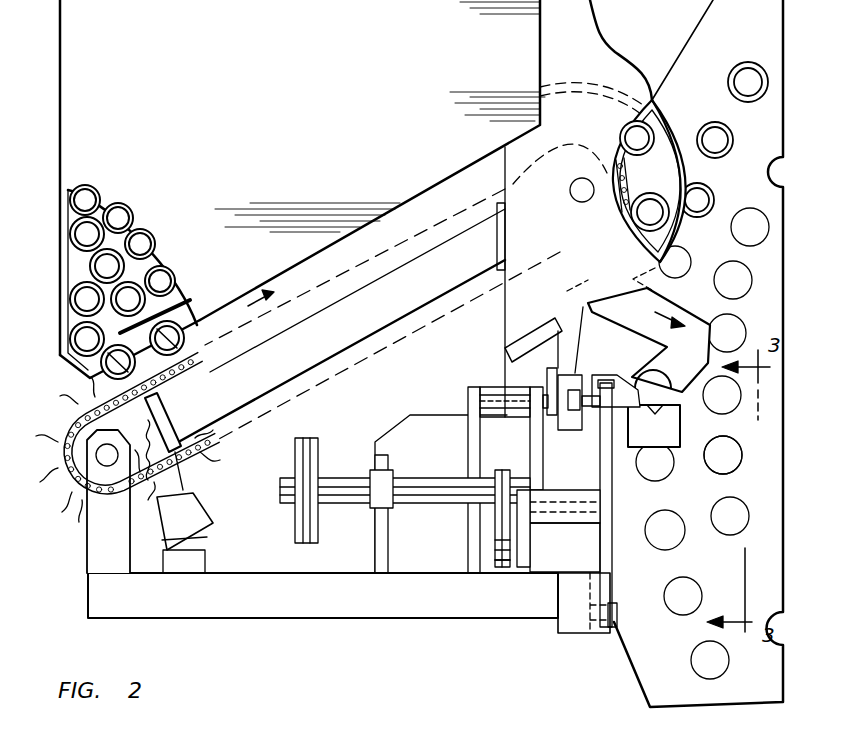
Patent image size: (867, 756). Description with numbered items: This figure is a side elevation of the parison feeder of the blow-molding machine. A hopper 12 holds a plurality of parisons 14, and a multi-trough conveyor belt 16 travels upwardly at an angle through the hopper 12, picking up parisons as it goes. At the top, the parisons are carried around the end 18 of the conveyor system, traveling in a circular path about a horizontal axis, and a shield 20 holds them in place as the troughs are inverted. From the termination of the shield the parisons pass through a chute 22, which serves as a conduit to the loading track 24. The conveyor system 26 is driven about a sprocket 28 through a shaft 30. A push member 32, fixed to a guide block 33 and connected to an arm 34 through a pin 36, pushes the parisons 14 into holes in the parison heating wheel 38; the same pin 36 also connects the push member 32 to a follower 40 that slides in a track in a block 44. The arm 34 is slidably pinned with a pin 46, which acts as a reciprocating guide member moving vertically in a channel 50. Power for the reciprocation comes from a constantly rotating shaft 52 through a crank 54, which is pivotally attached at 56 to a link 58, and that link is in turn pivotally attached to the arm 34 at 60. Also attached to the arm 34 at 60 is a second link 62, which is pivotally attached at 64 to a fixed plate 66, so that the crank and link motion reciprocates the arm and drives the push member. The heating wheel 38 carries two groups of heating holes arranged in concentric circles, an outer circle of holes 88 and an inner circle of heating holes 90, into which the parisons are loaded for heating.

The hopper 12 is at (156, 57).
The parisons 14 is at (78, 264).
The multi-trough conveyor belt 16 is at (72, 410).
The end of the conveyor system 18 is at (630, 172).
The shield 20 is at (690, 228).
The chute 22 is at (647, 309).
The loading track 24 is at (679, 452).
The conveyor system 26 is at (66, 493).
The sprocket 28 is at (170, 441).
The shaft 30 is at (108, 466).
The push member 32 is at (666, 374).
The guide block 33 is at (652, 414).
The arm 34 is at (614, 490).
The pin 36 is at (597, 382).
The parison heating wheel 38 is at (750, 35).
The follower 40 is at (574, 422).
The block 44 is at (585, 370).
The pin 46 is at (588, 634).
The channel 50 is at (613, 585).
The constantly rotating shaft 52 is at (494, 478).
The crank 54 is at (492, 558).
The pivot 56 is at (514, 566).
The link 58 is at (540, 536).
The pivot 60 is at (563, 490).
The link 62 is at (530, 437).
The pivot 64 is at (552, 370).
The fixed plate 66 is at (467, 435).
The outer circle of holes 88 is at (727, 660).
The inner circle of heating holes 90 is at (732, 466).